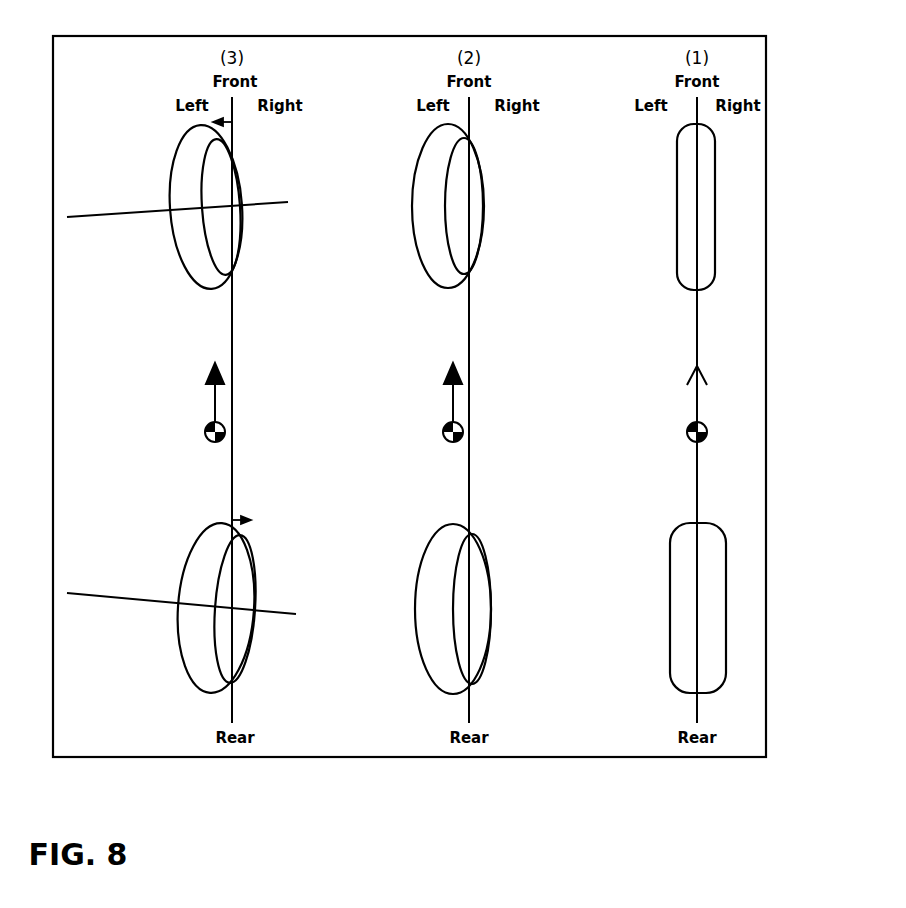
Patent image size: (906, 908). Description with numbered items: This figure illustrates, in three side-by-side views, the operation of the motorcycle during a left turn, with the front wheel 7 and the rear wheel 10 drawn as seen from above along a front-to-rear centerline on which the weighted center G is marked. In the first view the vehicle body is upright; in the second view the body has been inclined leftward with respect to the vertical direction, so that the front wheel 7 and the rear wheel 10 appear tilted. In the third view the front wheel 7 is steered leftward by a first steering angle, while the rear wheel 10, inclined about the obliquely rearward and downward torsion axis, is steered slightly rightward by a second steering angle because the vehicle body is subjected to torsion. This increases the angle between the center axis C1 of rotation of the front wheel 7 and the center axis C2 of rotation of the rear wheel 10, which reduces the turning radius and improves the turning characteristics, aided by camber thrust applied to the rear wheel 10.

The front wheel 7 is at (180, 264).
The rear wheel 10 is at (186, 681).
The weighted center G is at (208, 441).
The center axis of the rotation of the front wheel C1 is at (191, 205).
The center axis of the rotation of the rear wheel C2 is at (195, 608).